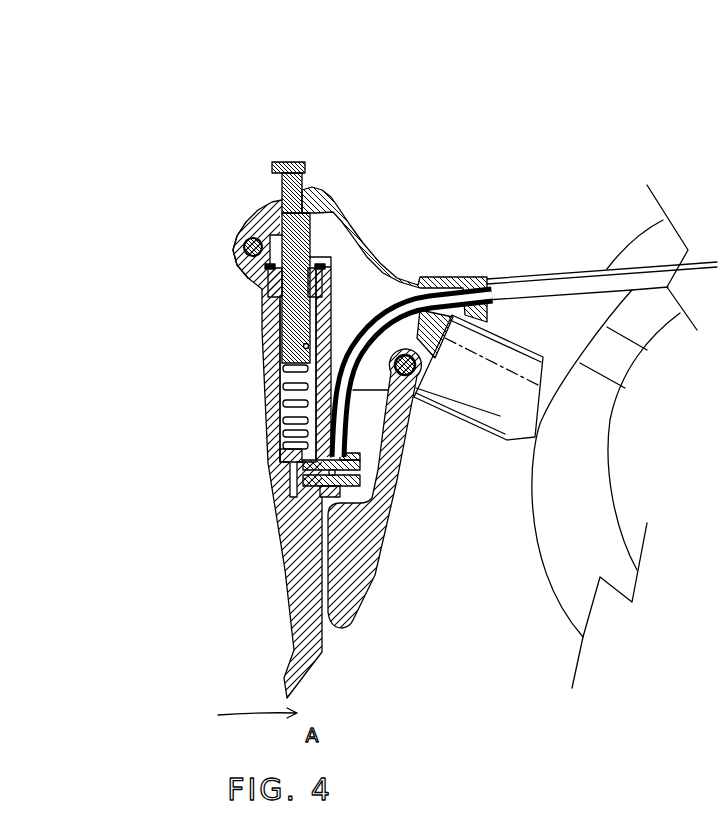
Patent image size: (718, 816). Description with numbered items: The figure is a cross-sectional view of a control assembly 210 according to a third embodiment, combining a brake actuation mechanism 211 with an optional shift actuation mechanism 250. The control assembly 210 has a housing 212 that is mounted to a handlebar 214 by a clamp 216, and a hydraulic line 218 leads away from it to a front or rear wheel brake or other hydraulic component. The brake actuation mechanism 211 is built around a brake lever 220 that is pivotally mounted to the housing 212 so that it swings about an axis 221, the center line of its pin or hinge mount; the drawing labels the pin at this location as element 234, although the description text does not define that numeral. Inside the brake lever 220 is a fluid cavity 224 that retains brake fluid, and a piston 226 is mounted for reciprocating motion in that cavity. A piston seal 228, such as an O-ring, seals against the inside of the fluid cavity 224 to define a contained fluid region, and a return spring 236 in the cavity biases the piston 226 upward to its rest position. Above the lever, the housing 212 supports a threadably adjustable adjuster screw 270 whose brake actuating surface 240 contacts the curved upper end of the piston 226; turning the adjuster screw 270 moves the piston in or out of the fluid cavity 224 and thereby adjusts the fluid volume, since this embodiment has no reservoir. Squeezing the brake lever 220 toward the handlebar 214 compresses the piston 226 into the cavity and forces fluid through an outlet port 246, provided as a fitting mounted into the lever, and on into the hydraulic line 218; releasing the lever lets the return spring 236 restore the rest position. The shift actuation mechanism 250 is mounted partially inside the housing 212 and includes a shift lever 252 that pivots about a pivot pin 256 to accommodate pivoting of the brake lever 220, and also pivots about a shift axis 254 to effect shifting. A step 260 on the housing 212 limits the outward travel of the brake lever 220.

The control assembly 210 is at (491, 201).
The brake actuation mechanism 211 is at (217, 595).
The housing 212 is at (343, 213).
The handlebar 214 is at (578, 468).
The clamp 216 is at (618, 363).
The hydraulic line 218 is at (537, 288).
The brake lever 220 is at (240, 232).
The axis 221 is at (242, 241).
The fluid cavity 224 is at (265, 398).
The piston 226 is at (263, 323).
The piston seal 228 is at (270, 350).
The pivot pin 234 is at (260, 281).
The return spring 236 is at (283, 434).
The brake actuating surface 240 is at (318, 193).
The outlet port 246 is at (300, 482).
The shift actuation mechanism 250 is at (451, 470).
The shift lever 252 is at (363, 607).
The shift axis 254 is at (480, 353).
The pivot pin 256 is at (410, 398).
The step 260 is at (249, 217).
The adjuster screw 270 is at (295, 165).